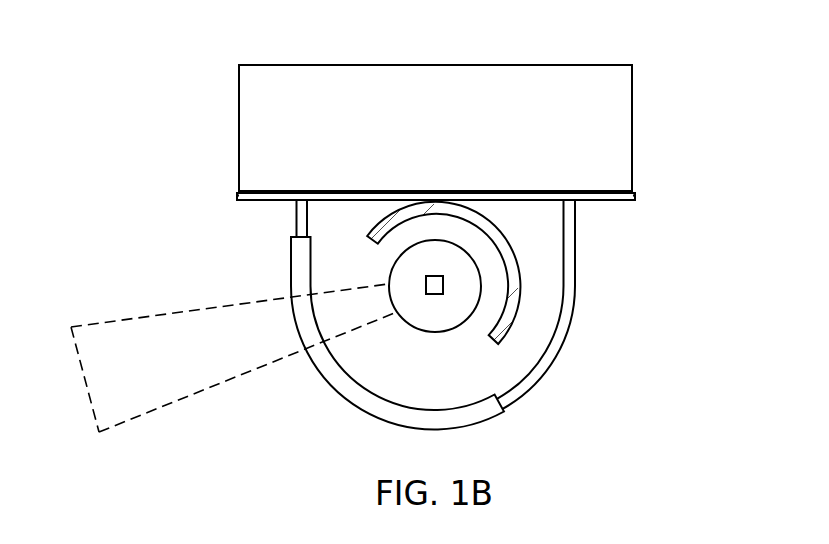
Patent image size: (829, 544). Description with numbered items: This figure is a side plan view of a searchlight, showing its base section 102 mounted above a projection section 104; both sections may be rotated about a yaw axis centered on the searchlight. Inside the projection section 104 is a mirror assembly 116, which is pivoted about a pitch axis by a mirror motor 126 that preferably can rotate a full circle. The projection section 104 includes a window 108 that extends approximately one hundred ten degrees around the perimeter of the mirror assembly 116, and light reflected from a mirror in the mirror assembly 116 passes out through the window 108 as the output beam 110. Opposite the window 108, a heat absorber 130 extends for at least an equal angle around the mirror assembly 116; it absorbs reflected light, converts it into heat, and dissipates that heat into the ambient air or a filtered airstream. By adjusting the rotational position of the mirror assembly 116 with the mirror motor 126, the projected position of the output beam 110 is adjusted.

The base section 102 is at (632, 119).
The projection section 104 is at (575, 253).
The window 108 is at (347, 400).
The output beam 110 is at (150, 314).
The mirror assembly 116 is at (433, 332).
The mirror motor 126 is at (425, 286).
The heat absorber 130 is at (497, 227).